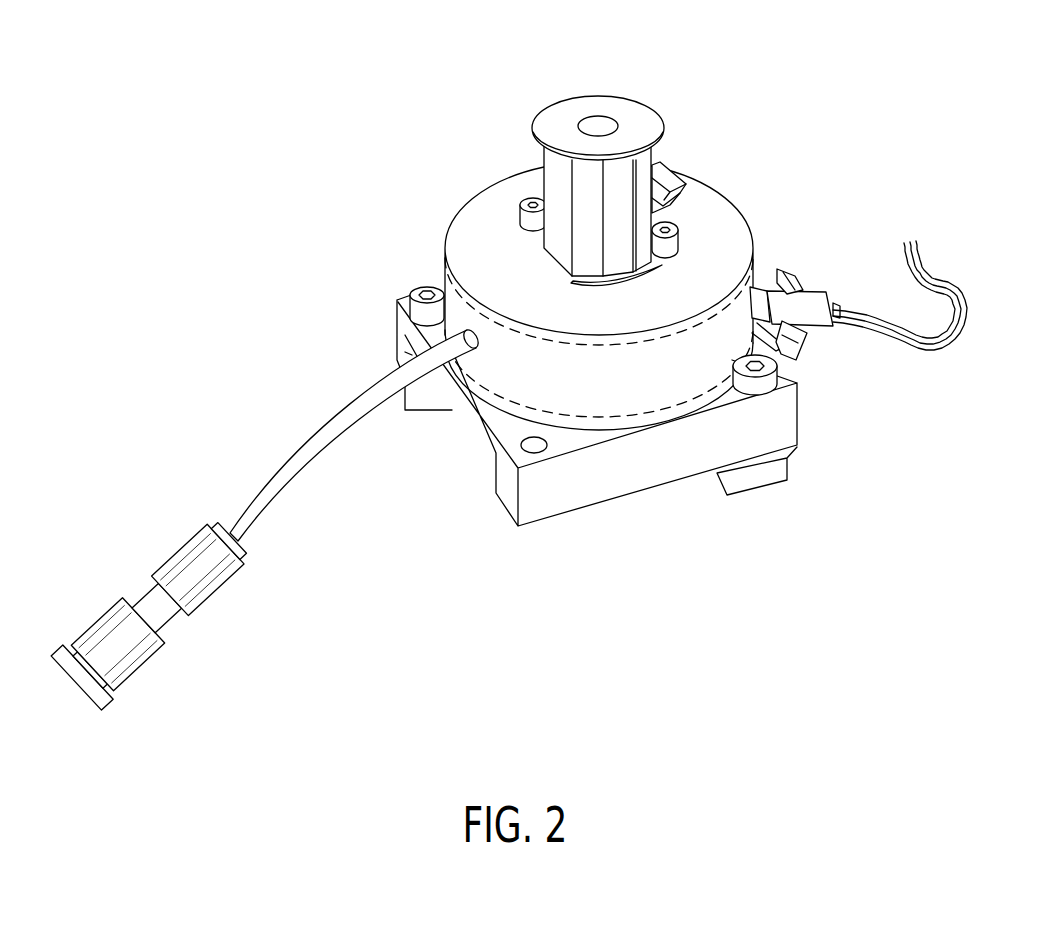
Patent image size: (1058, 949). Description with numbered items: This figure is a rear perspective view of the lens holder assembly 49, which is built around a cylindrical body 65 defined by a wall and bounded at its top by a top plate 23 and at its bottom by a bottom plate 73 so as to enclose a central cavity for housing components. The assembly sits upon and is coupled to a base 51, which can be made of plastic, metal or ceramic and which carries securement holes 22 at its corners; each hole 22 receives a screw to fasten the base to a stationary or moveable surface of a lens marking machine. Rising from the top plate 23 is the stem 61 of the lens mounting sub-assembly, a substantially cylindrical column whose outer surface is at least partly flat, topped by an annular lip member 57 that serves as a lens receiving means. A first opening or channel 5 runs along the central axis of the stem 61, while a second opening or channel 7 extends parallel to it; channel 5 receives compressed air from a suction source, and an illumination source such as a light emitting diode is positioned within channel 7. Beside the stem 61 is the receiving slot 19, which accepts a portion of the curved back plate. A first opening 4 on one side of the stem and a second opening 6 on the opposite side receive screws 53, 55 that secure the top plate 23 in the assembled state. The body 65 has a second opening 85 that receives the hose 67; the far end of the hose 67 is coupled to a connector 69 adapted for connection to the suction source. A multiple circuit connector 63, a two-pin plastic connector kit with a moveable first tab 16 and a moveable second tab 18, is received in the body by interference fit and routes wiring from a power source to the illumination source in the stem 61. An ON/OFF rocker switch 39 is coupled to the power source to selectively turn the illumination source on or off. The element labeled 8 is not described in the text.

The first opening 4 is at (677, 223).
The first opening or channel 5 is at (597, 118).
The second opening 6 is at (535, 207).
The second opening or channel 7 is at (617, 187).
The bracket lower portion 8 is at (672, 193).
The first tab 16 is at (793, 360).
The second tab 18 is at (793, 287).
The receiving slot 19 is at (626, 282).
The securement hole 22 is at (535, 450).
The top plate 23 is at (474, 240).
The ON/OFF rocker switch 39 is at (660, 173).
The lens holder assembly 49 is at (322, 284).
The base 51 is at (507, 485).
The screw 53 is at (680, 243).
The screw 55 is at (520, 217).
The annular lip member 57 is at (549, 118).
The stem 61 is at (557, 180).
The multiple circuit connector 63 is at (828, 340).
The body 65 is at (577, 387).
The hose 67 is at (258, 498).
The connector 69 is at (107, 645).
The bottom plate 73 is at (630, 420).
The second opening 85 is at (460, 403).